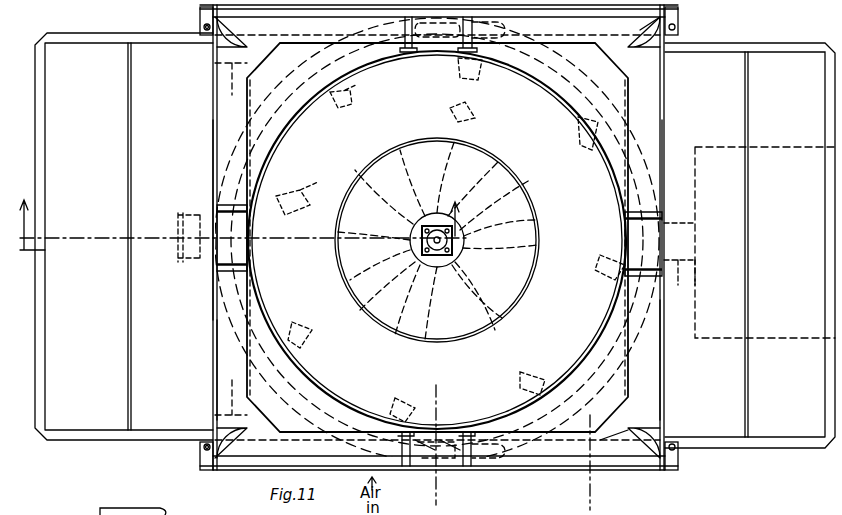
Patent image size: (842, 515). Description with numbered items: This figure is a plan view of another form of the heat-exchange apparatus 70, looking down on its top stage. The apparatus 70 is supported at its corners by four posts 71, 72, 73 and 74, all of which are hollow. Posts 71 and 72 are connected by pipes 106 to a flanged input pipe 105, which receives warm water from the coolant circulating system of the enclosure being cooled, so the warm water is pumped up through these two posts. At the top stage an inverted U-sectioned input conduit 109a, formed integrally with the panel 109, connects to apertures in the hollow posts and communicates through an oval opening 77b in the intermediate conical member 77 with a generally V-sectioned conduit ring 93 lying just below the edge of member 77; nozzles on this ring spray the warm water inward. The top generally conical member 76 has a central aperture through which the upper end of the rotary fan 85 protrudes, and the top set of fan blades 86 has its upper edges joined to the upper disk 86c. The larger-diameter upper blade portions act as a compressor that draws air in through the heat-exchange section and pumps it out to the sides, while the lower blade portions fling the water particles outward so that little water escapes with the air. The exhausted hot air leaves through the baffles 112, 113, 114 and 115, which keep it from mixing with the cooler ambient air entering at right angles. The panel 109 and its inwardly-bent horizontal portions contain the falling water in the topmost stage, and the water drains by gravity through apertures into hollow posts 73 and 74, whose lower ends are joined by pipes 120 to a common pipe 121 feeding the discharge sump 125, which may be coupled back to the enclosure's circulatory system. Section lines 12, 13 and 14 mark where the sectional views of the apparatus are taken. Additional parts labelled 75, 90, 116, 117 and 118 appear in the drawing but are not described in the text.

The section line 12- 12 is at (35, 250).
The section line 13- 13 is at (431, 494).
The section line 14- 14 is at (598, 497).
The apparatus 70 is at (138, 455).
The post 71 is at (225, 458).
The post 72 is at (207, 18).
The post 73 is at (679, 26).
The post 74 is at (653, 460).
The fastener 75 is at (204, 27).
The top conical member 76 is at (517, 133).
The intermediate conical member 77 is at (257, 90).
The oval opening 77b is at (452, 440).
The rotary fan 85 is at (430, 270).
The top set of fan blades 86 is at (513, 184).
The upper disk 86c is at (393, 142).
The clip 90 is at (338, 108).
The conduit ring 93 is at (596, 344).
The flanged input pipe 105 is at (187, 212).
The pipe 106 is at (245, 63).
The panel 109 is at (659, 118).
The input conduit 109a is at (506, 33).
The baffle 112 is at (128, 320).
The baffle 113 is at (45, 370).
The baffle 114 is at (745, 438).
The baffle 115 is at (825, 438).
The bracket 116 is at (248, 267).
The bracket bar 117 is at (232, 207).
The frame side member 118 is at (660, 166).
The pipe 120 is at (640, 40).
The common pipe 121 is at (679, 264).
The discharge sump 125 is at (800, 340).